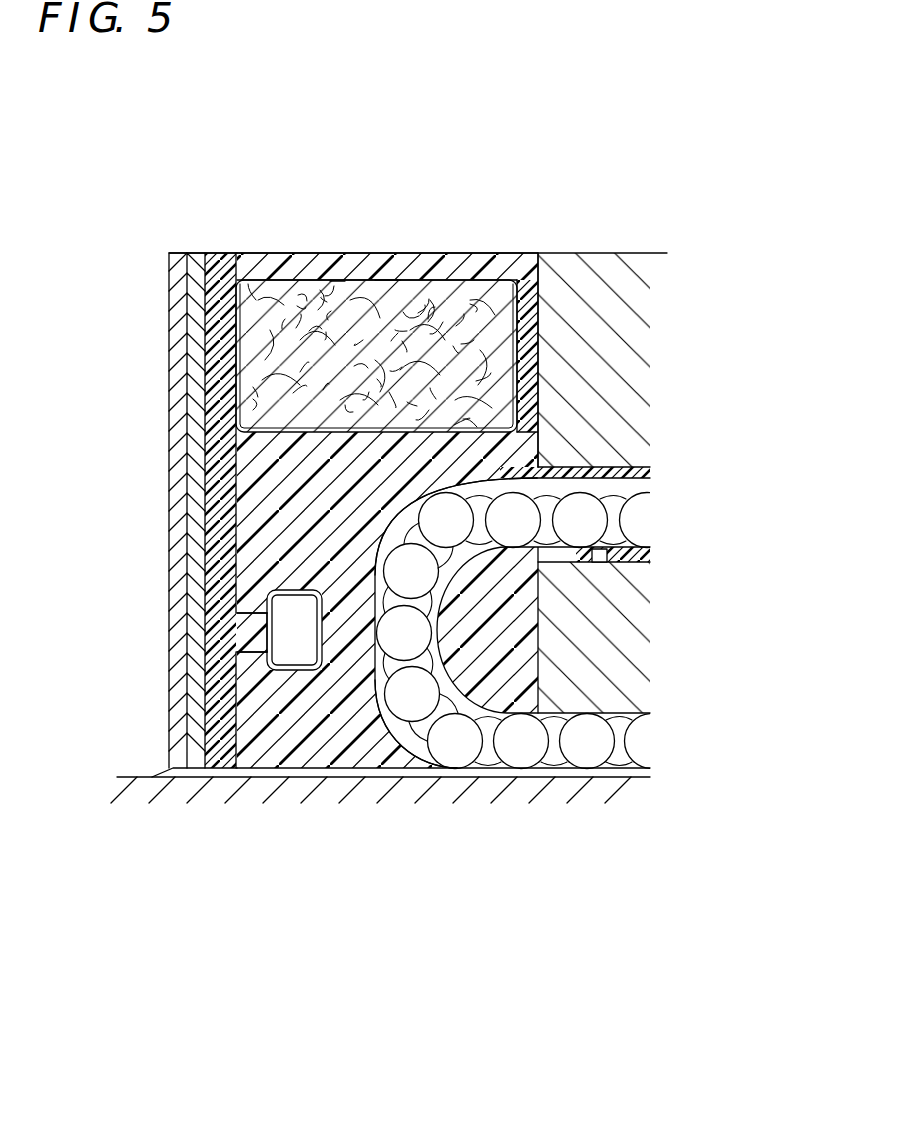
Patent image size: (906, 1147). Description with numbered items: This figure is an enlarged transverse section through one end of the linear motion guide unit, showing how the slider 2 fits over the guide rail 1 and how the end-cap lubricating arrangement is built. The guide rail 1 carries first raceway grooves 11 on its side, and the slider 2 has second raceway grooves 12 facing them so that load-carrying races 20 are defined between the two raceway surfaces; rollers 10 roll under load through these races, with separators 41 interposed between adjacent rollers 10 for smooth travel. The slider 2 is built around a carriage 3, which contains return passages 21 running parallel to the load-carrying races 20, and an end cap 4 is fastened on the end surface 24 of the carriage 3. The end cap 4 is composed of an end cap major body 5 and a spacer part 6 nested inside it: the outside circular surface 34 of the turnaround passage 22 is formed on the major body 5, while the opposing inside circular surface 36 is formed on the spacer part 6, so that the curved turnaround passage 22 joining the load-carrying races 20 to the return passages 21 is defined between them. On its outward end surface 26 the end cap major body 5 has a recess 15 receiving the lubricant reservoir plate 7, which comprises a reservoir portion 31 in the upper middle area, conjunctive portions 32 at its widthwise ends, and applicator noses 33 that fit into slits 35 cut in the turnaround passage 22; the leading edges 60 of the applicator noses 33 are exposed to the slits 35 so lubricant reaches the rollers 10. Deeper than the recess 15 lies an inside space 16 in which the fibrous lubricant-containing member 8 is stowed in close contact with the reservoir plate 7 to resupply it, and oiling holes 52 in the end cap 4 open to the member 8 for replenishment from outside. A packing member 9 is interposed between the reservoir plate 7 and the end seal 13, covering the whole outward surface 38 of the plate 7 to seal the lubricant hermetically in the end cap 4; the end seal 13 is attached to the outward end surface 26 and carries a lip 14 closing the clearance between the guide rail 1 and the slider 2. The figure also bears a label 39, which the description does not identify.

The guide rail 1 is at (327, 792).
The slider 2 is at (457, 252).
The carriage 3 is at (615, 317).
The end cap 4 is at (417, 263).
The end cap major body 5 is at (303, 500).
The spacer part 6 is at (518, 658).
The lubricant reservoir plate 7 is at (220, 353).
The lubricant-containing member 8 is at (307, 313).
The packing member 9 is at (195, 318).
The rollers 10 is at (302, 648).
The first raceway grooves 11 is at (410, 778).
The second raceway grooves 12 is at (643, 738).
The end seal 13 is at (178, 452).
The lip 14 is at (158, 766).
The recess 15 is at (222, 578).
The inside space 16 is at (500, 318).
The load-carrying races 20 is at (617, 772).
The return passages 21 is at (620, 545).
The turnaround passage 22 is at (357, 700).
The end surface 24 is at (527, 292).
The outward end surface 26 is at (205, 273).
The reservoir portion 31 is at (220, 297).
The conjunctive portions 32 is at (225, 699).
The applicator noses 33 is at (244, 778).
The outside circular surface 34 is at (452, 700).
The slit 35 is at (270, 778).
The inside circular surface 36 is at (455, 720).
The outward surface 38 is at (200, 400).
The lubricant passage 39 is at (390, 268).
The separators 41 is at (612, 503).
The oiling holes 52 is at (337, 267).
The leading edges 60 is at (270, 622).